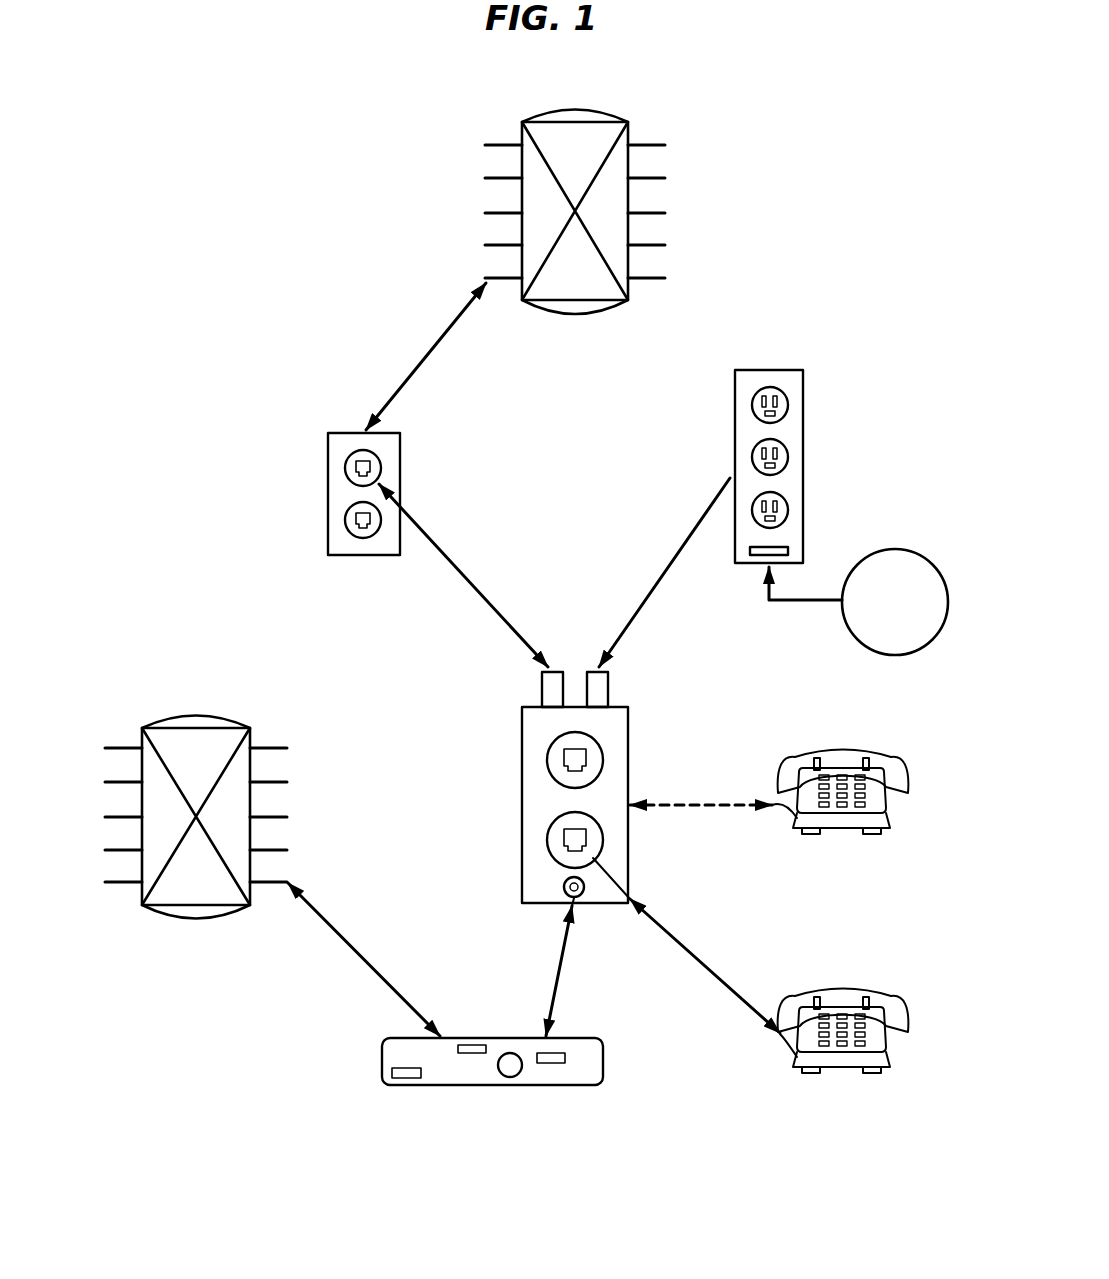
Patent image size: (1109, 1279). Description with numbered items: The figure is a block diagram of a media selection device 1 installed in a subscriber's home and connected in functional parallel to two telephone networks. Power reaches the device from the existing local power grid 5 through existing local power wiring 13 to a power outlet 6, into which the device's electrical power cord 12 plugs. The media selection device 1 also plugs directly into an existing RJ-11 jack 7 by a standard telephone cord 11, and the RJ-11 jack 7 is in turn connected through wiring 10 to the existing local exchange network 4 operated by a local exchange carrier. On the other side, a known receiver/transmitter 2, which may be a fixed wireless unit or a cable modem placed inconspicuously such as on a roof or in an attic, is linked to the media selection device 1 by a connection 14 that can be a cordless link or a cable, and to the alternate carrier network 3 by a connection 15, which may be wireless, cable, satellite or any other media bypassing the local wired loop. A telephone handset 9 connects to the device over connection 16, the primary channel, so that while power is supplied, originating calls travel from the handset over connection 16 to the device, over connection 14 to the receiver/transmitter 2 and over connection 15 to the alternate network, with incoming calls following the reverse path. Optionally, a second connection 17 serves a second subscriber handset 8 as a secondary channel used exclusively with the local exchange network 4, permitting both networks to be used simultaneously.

The media selection device 1 is at (629, 723).
The receiver/transmitter 2 is at (573, 1037).
The alternate carrier network 3 is at (218, 715).
The local exchange network 4 is at (626, 121).
The local power grid 5 is at (945, 580).
The power outlet 6 is at (785, 370).
The RJ-11 jack 7 is at (403, 448).
The second subscriber handset 8 is at (890, 750).
The telephone handset 9 is at (888, 990).
The wiring 10 is at (420, 358).
The telephone cord 11 is at (460, 567).
The power cord 12 is at (657, 575).
The local power wiring 13 is at (820, 602).
The connection 14 is at (548, 977).
The connection 15 is at (352, 947).
The connection 16 is at (700, 960).
The second connection 17 is at (707, 803).